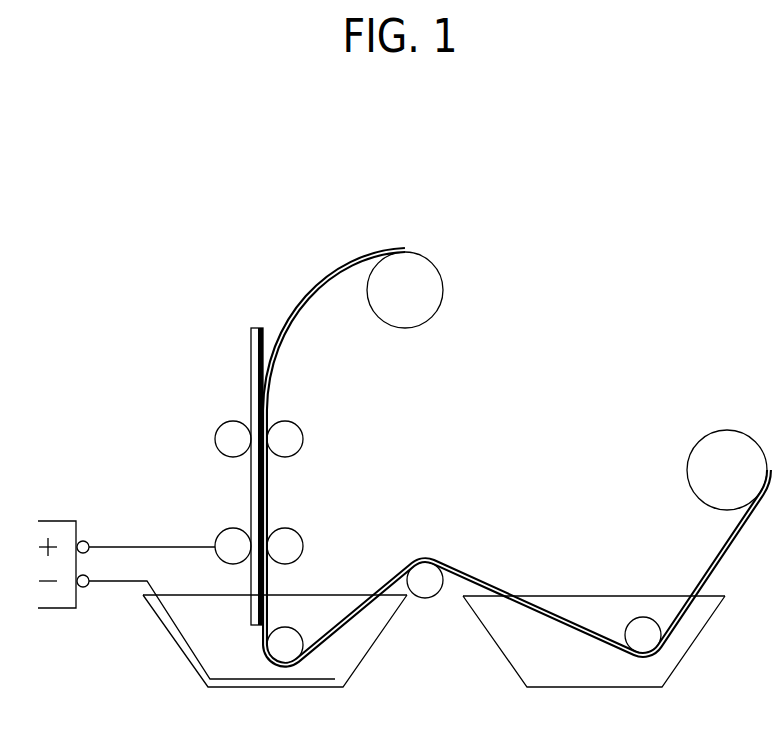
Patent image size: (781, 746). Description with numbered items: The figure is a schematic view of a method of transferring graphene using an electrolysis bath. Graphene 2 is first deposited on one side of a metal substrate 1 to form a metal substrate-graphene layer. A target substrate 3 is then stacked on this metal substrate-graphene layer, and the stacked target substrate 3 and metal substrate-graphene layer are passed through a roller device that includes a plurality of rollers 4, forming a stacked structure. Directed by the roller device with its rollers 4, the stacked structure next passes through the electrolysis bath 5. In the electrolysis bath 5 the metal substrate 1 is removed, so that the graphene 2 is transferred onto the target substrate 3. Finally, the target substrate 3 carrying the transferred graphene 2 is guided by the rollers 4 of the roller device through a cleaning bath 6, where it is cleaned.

The metal substrate 1 is at (250, 350).
The graphene 2 is at (263, 328).
The target substrate 3 is at (292, 323).
The rollers 4 is at (297, 448).
The electrolysis bath 5 is at (363, 660).
The cleaning bath 6 is at (682, 658).